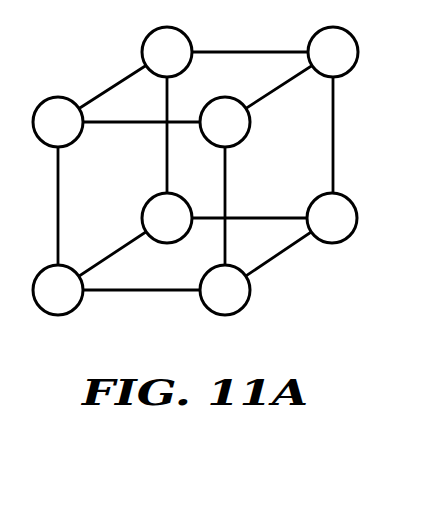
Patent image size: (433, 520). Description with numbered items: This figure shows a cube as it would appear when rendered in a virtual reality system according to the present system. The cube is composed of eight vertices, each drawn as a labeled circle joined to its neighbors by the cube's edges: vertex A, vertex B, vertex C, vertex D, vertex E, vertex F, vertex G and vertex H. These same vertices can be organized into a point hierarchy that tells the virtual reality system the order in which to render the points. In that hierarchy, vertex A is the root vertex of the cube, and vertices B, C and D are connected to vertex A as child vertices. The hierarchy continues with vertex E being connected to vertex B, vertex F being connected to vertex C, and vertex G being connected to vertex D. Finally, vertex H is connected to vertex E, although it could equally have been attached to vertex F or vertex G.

The vertex A is at (58, 122).
The vertex B is at (167, 52).
The vertex C is at (225, 122).
The vertex D is at (58, 290).
The vertex E is at (167, 218).
The vertex F is at (333, 52).
The vertex G is at (225, 290).
The vertex H is at (332, 218).